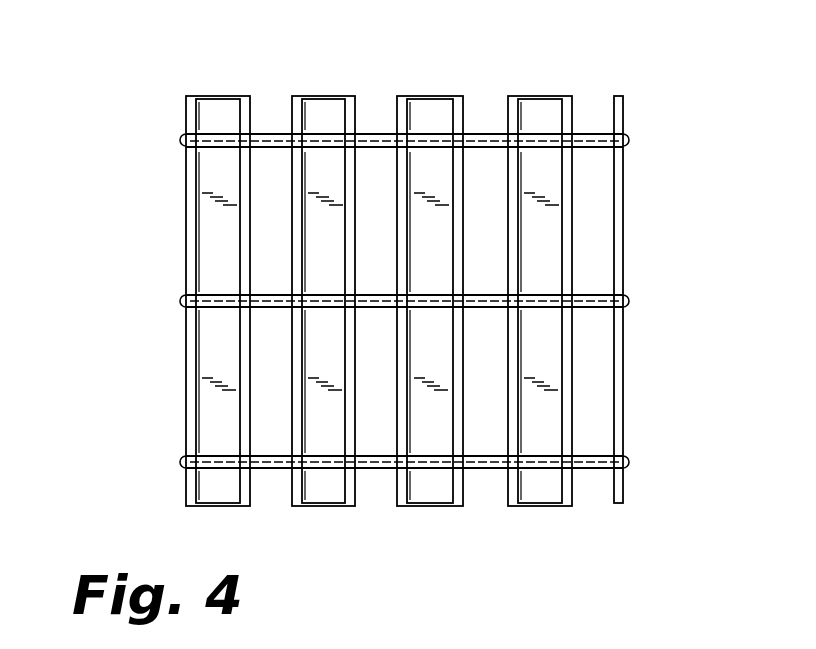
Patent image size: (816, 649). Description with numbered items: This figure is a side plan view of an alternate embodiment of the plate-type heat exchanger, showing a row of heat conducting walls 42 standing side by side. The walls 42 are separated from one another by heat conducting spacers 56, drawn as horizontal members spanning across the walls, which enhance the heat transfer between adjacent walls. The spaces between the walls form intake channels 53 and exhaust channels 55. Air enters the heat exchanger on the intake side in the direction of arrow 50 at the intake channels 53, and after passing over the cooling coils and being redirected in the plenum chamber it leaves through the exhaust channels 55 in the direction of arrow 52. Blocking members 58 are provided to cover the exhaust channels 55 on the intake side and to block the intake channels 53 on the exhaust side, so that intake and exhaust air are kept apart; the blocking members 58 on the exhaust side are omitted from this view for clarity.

The arrow indicating intake air direction 50 is at (377, 103).
The heat conducting walls 42 is at (625, 200).
The arrow indicating exhaust air direction 52 is at (222, 248).
The intake channels 53 is at (267, 483).
The exhaust channels 55 is at (220, 418).
The heat conducting spacers 56 is at (592, 134).
The blocking members 58 is at (215, 96).